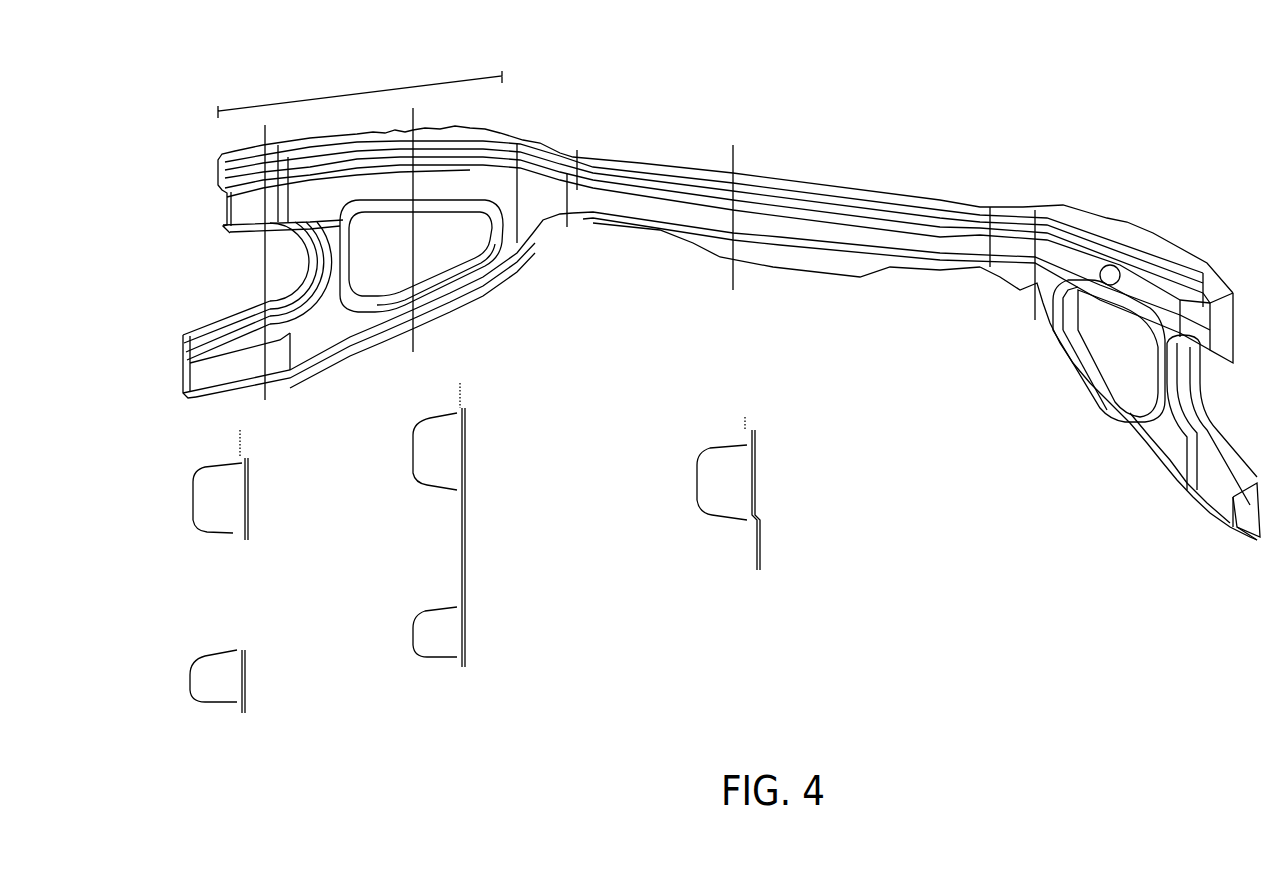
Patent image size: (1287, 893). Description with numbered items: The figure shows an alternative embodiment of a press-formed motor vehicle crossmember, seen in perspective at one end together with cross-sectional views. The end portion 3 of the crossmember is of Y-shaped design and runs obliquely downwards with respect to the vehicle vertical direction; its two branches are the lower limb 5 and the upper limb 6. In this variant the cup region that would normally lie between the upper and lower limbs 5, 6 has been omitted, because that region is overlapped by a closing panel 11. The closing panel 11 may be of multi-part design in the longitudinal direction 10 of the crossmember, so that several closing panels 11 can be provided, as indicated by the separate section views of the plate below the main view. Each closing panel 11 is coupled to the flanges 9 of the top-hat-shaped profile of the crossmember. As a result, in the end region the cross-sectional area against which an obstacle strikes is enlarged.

The end portion 3 is at (360, 63).
The lower limb 5 is at (208, 691).
The upper limb 6 is at (206, 512).
The flange 9 is at (715, 490).
The longitudinal direction 10 is at (855, 125).
The closing panel 11 is at (667, 450).